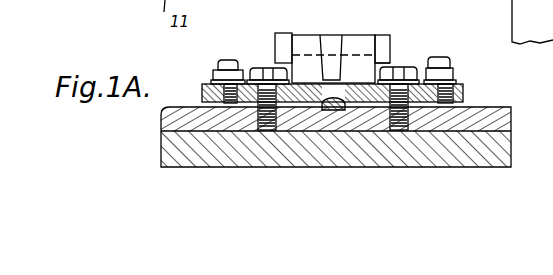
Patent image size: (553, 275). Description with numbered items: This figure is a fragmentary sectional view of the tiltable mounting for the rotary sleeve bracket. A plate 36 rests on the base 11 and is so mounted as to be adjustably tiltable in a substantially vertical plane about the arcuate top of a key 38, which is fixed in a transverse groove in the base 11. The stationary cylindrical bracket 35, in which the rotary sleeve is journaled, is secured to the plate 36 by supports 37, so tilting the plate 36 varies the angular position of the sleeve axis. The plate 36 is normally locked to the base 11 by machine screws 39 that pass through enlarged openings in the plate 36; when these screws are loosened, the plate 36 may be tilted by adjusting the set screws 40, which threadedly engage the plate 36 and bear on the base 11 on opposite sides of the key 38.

The base 11 is at (500, 115).
The stationary cylindrical bracket 35 is at (358, 34).
The plate 36 is at (463, 86).
The supports 37 is at (375, 62).
The key 38 is at (333, 110).
The machine screws 39 is at (267, 68).
The set screws 40 is at (222, 61).